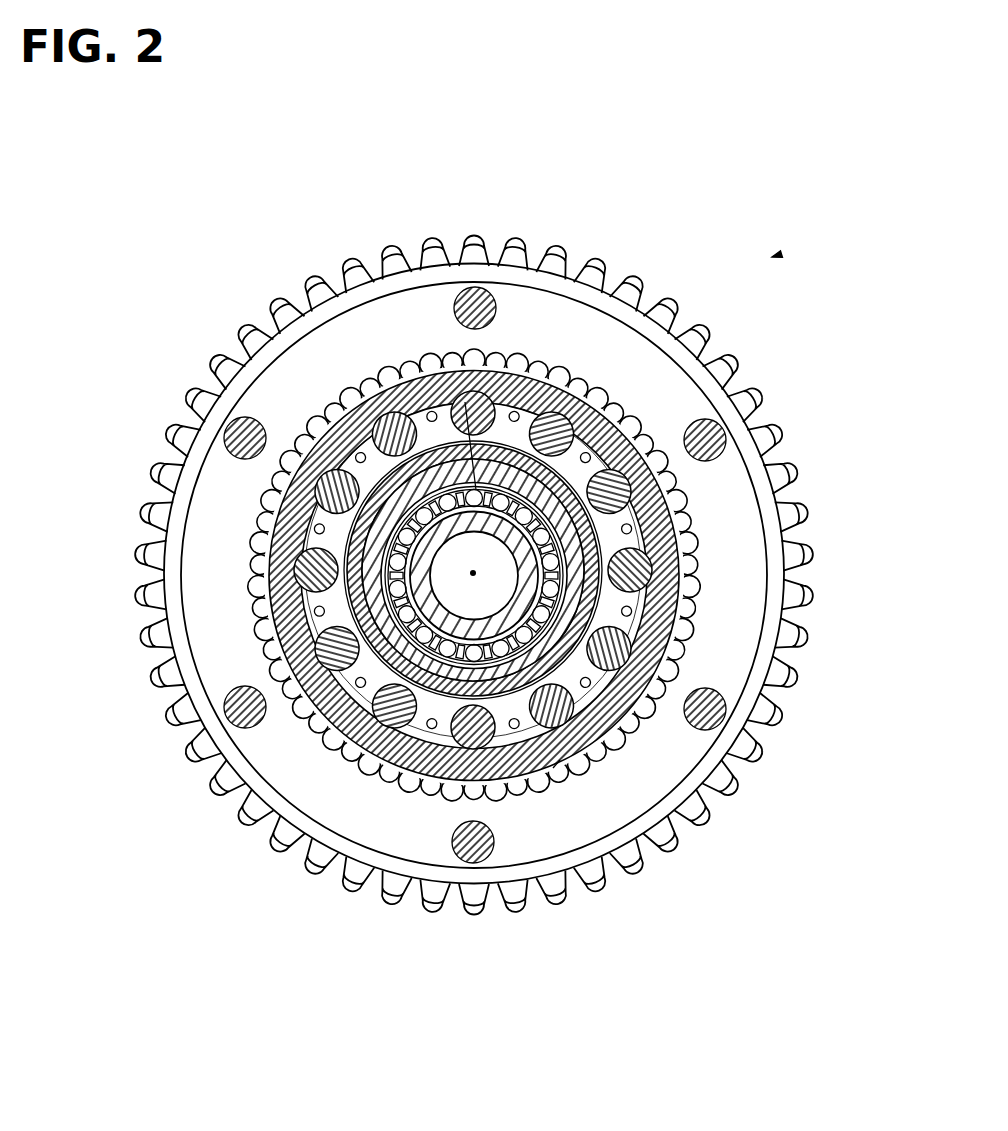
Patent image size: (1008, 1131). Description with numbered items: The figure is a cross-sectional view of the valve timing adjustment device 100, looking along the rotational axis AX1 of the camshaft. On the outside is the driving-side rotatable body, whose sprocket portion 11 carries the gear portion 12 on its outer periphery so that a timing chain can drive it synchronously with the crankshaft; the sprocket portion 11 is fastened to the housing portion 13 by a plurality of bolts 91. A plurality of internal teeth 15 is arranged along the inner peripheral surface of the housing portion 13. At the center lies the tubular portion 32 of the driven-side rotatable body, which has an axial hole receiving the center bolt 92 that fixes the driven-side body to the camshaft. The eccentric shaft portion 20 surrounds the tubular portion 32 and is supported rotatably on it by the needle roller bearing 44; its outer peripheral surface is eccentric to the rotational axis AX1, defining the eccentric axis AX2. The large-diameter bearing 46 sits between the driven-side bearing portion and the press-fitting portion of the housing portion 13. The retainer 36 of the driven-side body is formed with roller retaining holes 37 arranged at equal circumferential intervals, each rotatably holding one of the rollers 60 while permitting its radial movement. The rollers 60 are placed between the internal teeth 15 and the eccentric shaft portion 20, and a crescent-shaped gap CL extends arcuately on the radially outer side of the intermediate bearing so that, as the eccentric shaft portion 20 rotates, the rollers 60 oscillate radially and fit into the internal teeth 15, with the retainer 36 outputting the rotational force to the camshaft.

The valve timing adjustment device 100 is at (772, 257).
The sprocket portion 11 is at (626, 297).
The gear portion 12 is at (657, 303).
The housing portion 13 is at (548, 325).
The bolts 91 is at (712, 728).
The center bolt 92 is at (352, 387).
The tubular portion 32 is at (423, 357).
The needle roller bearing 44 is at (303, 435).
The eccentric shaft portion 20 is at (280, 557).
The large-diameter bearing 46 is at (263, 550).
The roller retaining holes 37 is at (263, 593).
The retainer 36 is at (260, 627).
The rollers 60 is at (258, 600).
The internal teeth 15 is at (268, 662).
The rotational axis AX1 is at (478, 578).
The eccentric axis AX2 is at (476, 572).
The gap CL is at (553, 768).